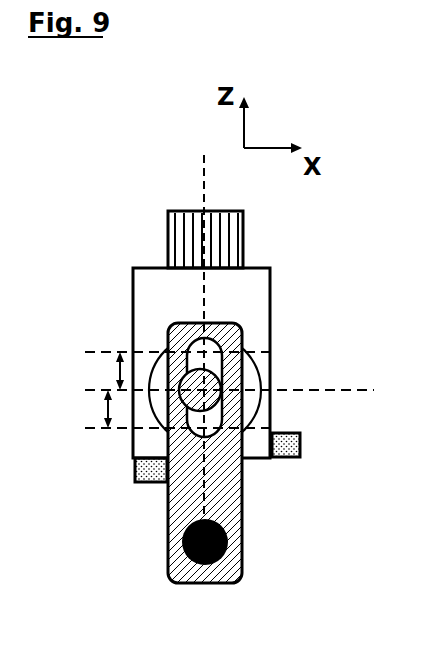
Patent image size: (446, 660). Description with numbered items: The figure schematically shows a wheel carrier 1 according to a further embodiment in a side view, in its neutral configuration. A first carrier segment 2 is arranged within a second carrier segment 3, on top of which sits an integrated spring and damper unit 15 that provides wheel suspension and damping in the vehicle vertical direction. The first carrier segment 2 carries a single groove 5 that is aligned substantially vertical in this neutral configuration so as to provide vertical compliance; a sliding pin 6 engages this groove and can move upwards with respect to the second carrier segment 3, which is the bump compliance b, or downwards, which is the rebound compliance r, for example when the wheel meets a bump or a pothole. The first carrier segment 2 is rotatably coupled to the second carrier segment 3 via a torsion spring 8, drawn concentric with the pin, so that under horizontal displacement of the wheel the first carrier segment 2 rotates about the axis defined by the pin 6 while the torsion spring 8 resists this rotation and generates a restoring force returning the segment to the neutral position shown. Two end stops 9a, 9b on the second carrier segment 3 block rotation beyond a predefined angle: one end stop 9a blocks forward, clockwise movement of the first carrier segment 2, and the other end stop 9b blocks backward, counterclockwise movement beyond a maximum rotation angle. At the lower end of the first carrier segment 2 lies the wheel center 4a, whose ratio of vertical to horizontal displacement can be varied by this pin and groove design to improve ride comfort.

The wheel carrier 1 is at (103, 181).
The first carrier segment 2 is at (232, 520).
The second carrier segment 3 is at (262, 298).
The wheel center 4a is at (182, 545).
The groove 5 is at (182, 341).
The sliding pin 6 is at (246, 370).
The torsion spring 8 is at (253, 400).
The end stop 9a is at (133, 474).
The end stop 9b is at (296, 448).
The integrated spring and damper unit 15 is at (238, 243).
The bump compliance b is at (99, 374).
The rebound compliance r is at (84, 406).